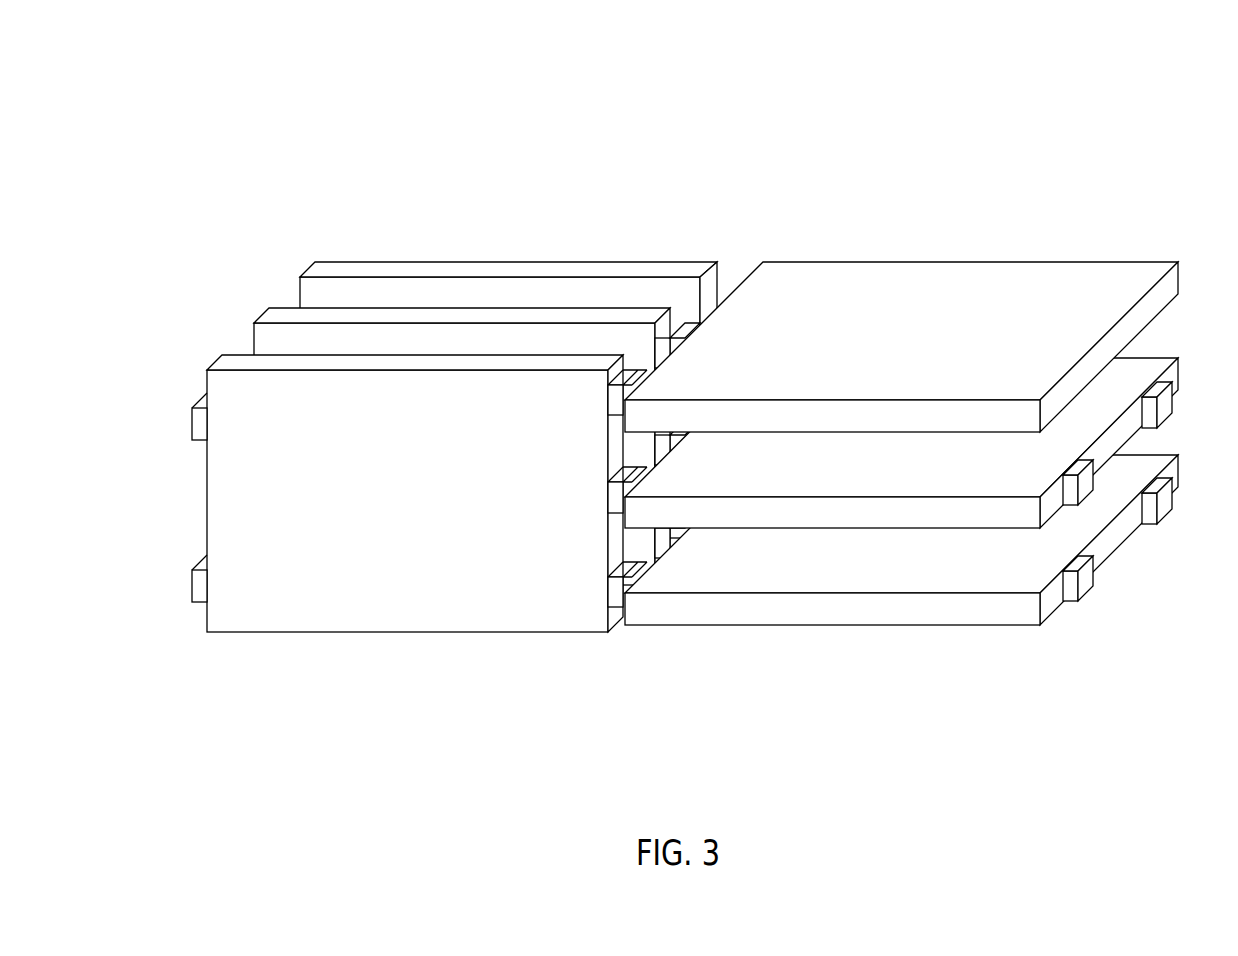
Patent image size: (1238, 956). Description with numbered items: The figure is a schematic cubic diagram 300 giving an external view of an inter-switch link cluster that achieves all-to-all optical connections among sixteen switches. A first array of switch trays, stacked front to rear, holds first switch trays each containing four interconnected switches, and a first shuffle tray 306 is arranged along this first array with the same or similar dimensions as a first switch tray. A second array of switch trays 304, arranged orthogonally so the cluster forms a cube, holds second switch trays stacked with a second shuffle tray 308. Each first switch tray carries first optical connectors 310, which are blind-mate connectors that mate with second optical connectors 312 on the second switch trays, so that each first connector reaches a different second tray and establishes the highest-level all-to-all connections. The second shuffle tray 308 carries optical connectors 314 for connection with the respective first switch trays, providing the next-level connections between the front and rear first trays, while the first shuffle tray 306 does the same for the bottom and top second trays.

The schematic cubic diagram 300 is at (1134, 42).
The second array of switch trays 304 is at (905, 508).
The first shuffle tray 306 is at (325, 267).
The second shuffle tray 308 is at (902, 415).
The first optical connectors 310 is at (615, 590).
The second optical connectors 312 is at (614, 580).
The optical connectors 314 is at (637, 373).